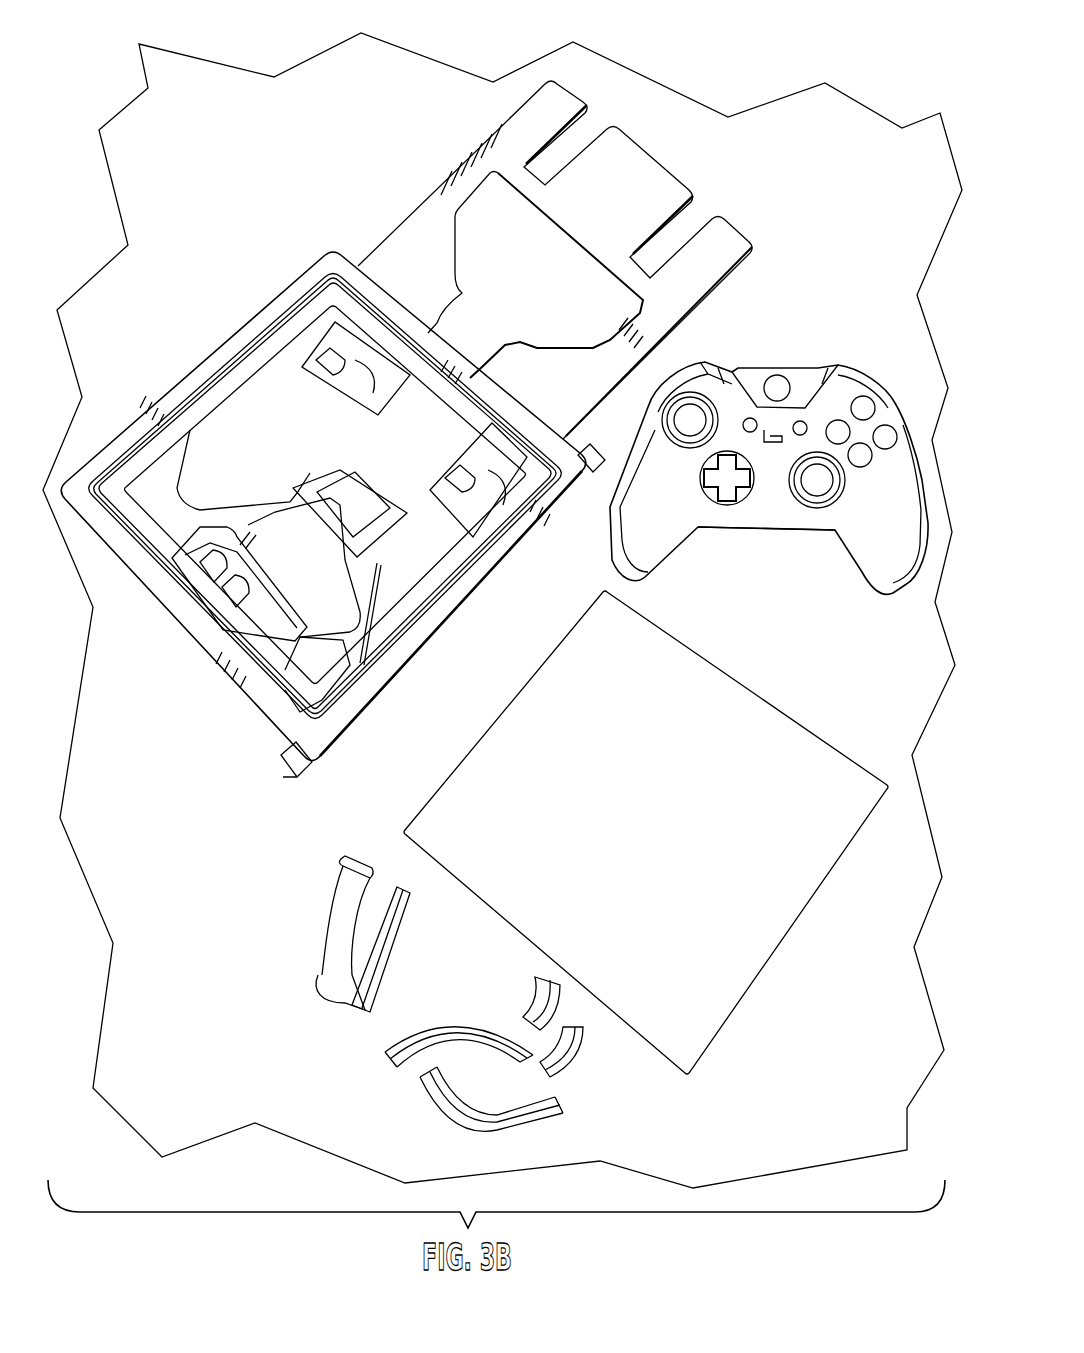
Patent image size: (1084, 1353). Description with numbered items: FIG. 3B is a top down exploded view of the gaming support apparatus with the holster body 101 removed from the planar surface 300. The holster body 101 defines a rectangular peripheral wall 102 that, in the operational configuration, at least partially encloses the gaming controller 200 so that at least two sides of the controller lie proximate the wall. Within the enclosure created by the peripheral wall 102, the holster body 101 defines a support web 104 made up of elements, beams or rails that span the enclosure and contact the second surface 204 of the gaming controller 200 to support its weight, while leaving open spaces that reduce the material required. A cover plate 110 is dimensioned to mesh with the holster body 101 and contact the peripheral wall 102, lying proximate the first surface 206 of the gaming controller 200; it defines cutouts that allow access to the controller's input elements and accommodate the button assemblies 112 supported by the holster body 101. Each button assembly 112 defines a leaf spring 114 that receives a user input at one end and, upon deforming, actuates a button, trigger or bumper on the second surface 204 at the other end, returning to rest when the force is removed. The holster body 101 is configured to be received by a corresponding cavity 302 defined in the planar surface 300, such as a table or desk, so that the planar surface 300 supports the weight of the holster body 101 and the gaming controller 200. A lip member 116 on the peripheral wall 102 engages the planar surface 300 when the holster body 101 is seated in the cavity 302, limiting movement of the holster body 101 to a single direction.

The holster body 101 is at (155, 385).
The peripheral wall 102 is at (364, 745).
The support web 104 is at (253, 528).
The cover plate 110 is at (497, 160).
The button assemblies 112 is at (220, 560).
The leaf spring 114 is at (547, 1067).
The lip member 116 is at (580, 462).
The gaming controller 200 is at (858, 365).
The second surface 204 is at (733, 530).
The first surface 206 is at (667, 447).
The planar surface 300 is at (817, 1010).
The cavity 302 is at (766, 952).